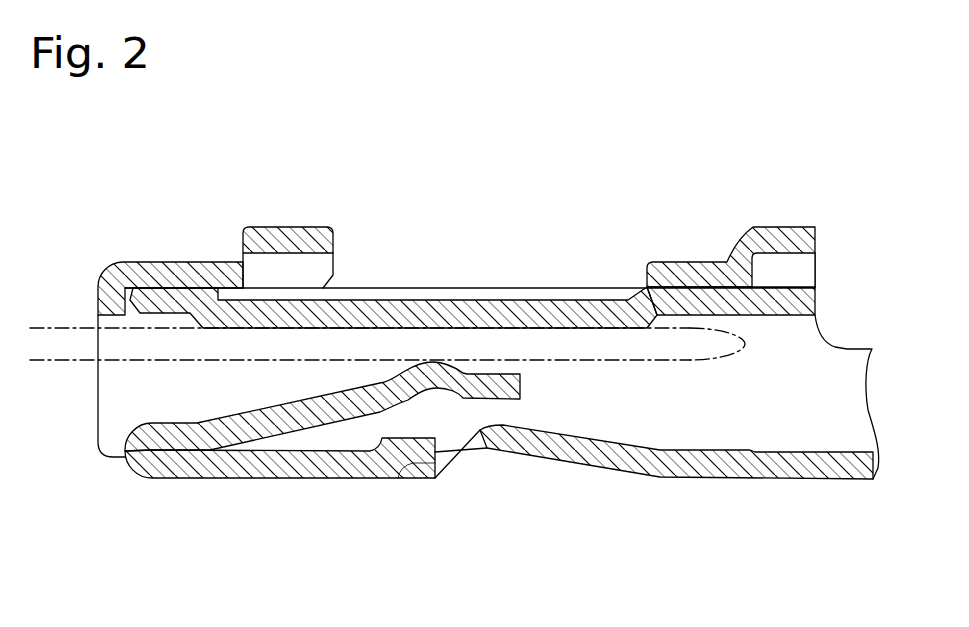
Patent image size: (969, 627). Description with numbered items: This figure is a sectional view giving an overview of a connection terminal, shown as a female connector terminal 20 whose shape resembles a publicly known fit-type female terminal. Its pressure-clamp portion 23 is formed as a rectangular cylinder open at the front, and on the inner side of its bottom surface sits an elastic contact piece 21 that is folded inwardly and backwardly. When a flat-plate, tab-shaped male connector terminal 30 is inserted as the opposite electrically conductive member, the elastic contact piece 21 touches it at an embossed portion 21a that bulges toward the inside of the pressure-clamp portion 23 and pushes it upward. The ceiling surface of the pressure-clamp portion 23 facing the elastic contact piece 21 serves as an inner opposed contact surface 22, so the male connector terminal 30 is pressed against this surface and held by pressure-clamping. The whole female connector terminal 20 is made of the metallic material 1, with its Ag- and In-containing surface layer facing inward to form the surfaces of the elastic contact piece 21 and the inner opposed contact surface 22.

The metallic material 1 is at (497, 300).
The female connector terminal 20 is at (755, 193).
The elastic contact piece 21 is at (303, 413).
The embossed portion 21a is at (433, 362).
The inner opposed contact surface 22 is at (553, 318).
The pressure-clamp portion 23 is at (607, 418).
The male connector terminal 30 is at (72, 352).